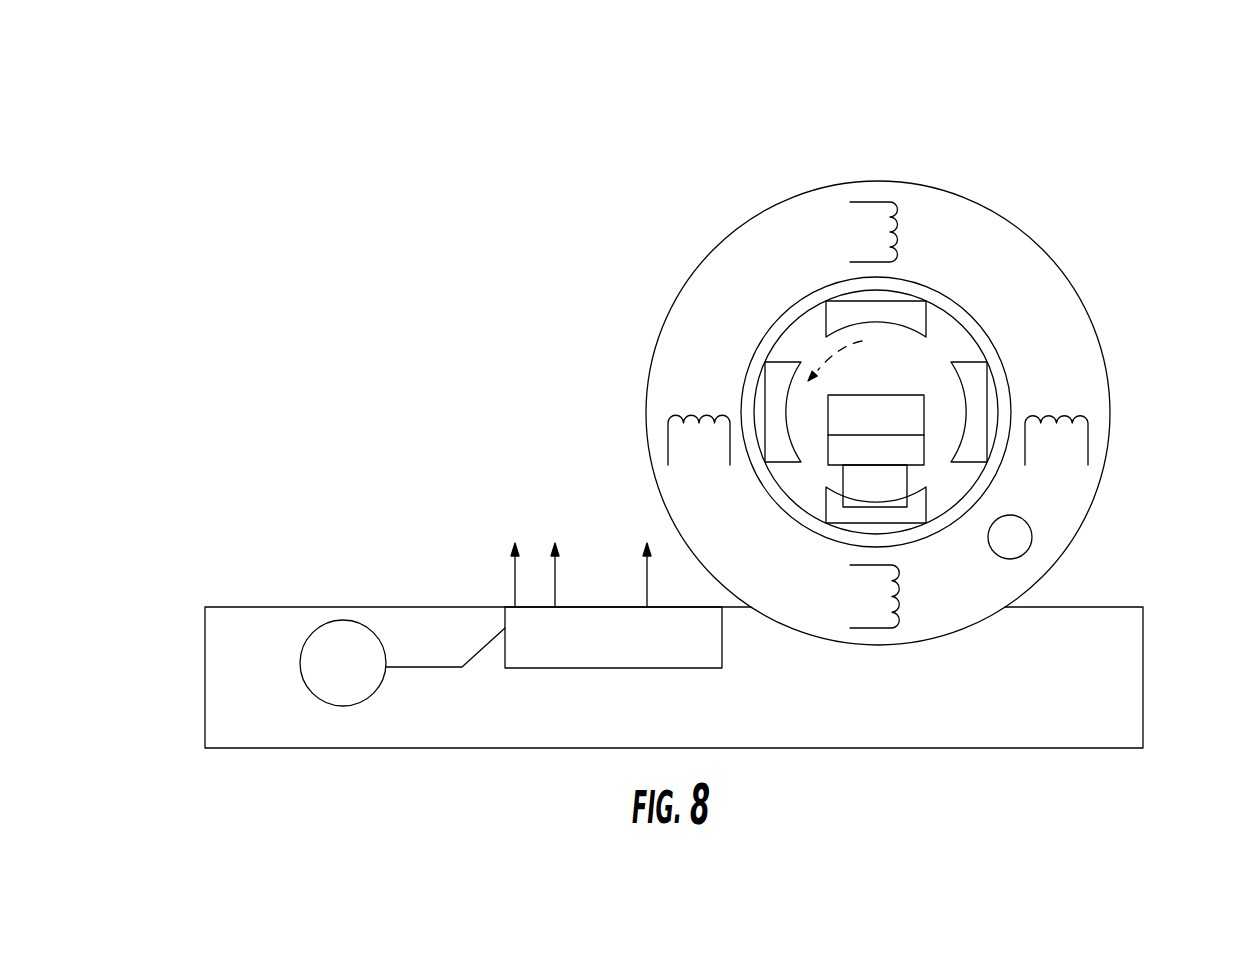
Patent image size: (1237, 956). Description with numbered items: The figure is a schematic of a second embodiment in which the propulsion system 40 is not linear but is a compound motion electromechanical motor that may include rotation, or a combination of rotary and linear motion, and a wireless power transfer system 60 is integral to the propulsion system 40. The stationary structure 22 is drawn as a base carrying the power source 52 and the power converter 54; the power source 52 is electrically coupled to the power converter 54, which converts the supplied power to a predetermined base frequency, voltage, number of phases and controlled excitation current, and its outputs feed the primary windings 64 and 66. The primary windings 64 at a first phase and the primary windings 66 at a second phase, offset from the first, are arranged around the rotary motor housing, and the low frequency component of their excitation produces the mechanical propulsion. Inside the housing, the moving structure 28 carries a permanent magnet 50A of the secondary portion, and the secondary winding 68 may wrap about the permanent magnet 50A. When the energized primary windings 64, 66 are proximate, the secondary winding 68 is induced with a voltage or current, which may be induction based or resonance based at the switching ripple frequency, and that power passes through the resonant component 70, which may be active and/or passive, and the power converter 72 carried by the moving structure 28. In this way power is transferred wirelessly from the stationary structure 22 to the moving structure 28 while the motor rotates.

The stationary structure 22 is at (1145, 640).
The moving structure 28 is at (937, 333).
The propulsion system 40 is at (867, 357).
The permanent magnet 50A is at (900, 294).
The power source 52 is at (332, 620).
The power converter 54 is at (505, 615).
The wireless power transfer system 60 is at (733, 230).
The primary winding 64 is at (1053, 412).
The primary winding 66 is at (908, 362).
The secondary winding 68 is at (908, 482).
The resonant component 70 is at (923, 413).
The power converter 72 is at (827, 452).